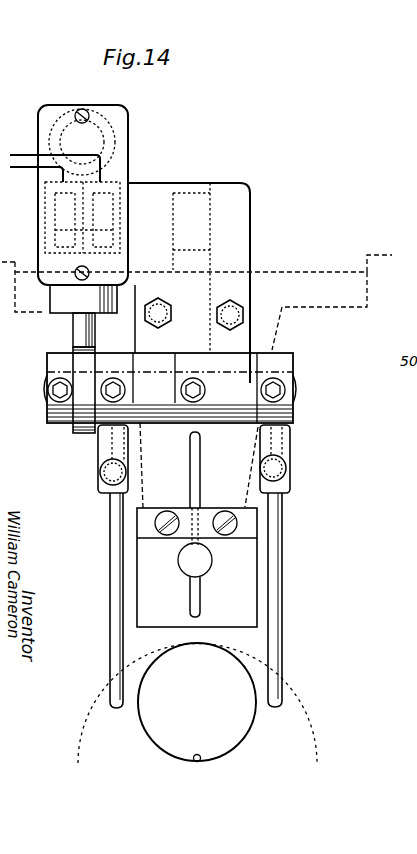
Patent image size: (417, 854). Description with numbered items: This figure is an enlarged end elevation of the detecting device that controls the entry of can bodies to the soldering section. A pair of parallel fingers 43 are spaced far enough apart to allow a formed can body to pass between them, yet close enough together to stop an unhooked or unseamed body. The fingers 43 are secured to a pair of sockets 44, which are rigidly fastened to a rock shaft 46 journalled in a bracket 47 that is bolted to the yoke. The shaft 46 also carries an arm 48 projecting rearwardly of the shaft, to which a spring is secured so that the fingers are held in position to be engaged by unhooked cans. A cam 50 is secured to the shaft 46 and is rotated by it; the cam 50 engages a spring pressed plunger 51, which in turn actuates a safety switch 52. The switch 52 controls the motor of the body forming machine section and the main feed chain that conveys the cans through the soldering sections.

The fingers 43 is at (117, 572).
The sockets 44 is at (98, 457).
The rock shaft 46 is at (293, 385).
The bracket 47 is at (242, 282).
The arm 48 is at (203, 376).
The cam 50 is at (73, 430).
The spring pressed plunger 51 is at (80, 328).
The safety switch 52 is at (83, 232).